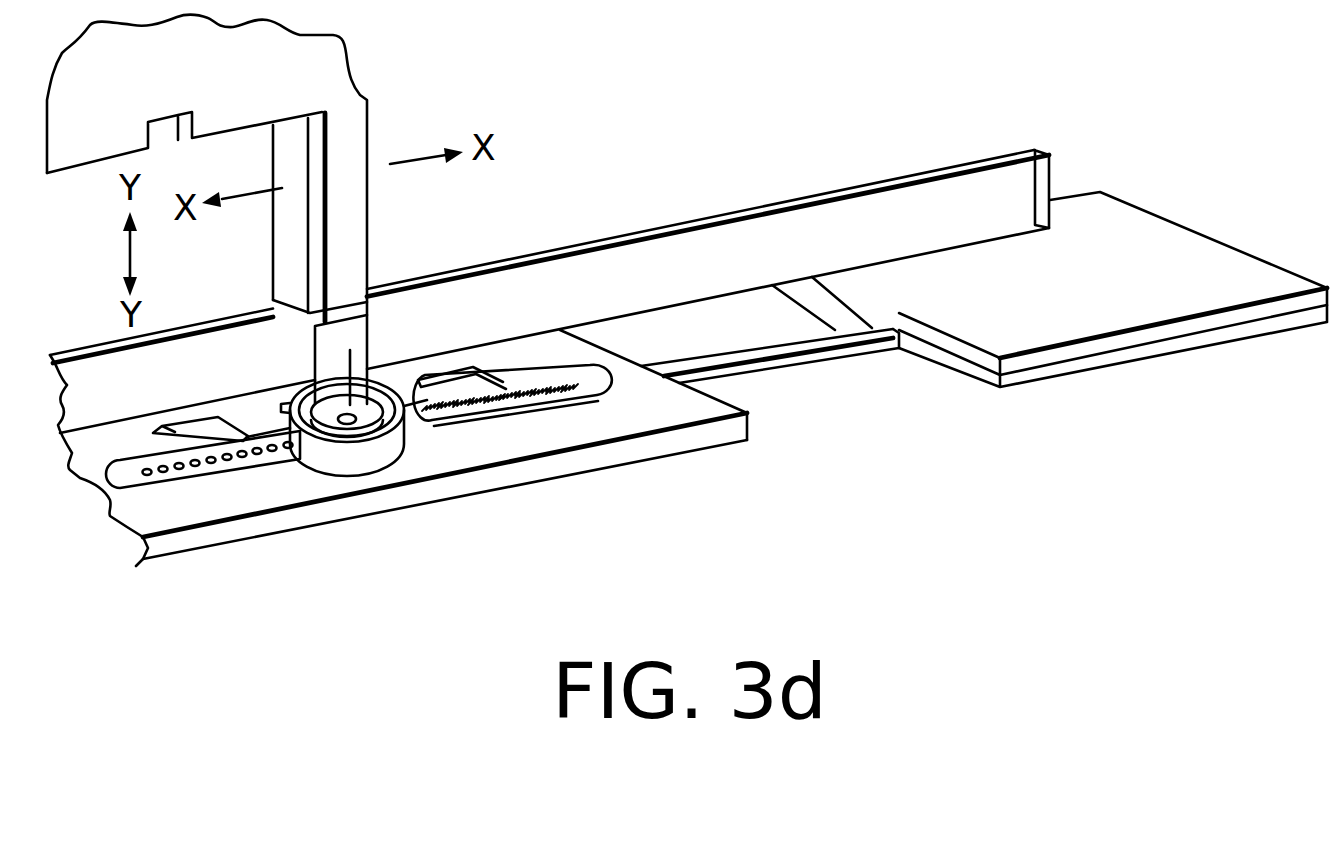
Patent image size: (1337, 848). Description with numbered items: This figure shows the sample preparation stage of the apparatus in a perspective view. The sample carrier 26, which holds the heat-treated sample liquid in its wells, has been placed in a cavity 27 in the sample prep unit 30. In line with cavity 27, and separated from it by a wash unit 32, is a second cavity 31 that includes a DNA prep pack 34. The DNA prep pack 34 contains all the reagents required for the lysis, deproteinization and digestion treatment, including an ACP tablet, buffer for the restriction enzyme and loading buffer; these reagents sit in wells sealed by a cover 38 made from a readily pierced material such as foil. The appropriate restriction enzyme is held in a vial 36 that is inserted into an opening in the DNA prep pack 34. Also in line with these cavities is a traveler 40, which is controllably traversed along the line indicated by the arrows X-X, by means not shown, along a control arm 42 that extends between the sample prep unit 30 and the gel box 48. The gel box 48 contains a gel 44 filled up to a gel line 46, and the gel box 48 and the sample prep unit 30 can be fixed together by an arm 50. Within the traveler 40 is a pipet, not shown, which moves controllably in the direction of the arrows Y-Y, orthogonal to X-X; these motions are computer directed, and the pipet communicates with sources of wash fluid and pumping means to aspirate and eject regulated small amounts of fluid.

The sample carrier 26 is at (562, 372).
The cavity 27 is at (447, 380).
The sample prep unit 30 is at (617, 423).
The cavity 31 is at (153, 434).
The wash unit 32 is at (360, 462).
The DNA prep pack 34 is at (115, 488).
The vial 36 is at (273, 442).
The cover 38 is at (270, 445).
The traveler 40 is at (360, 192).
The control arm 42 is at (872, 215).
The gel 44 is at (1124, 212).
The gel line 46 is at (1272, 305).
The gel box 48 is at (1262, 328).
The arm 50 is at (778, 367).